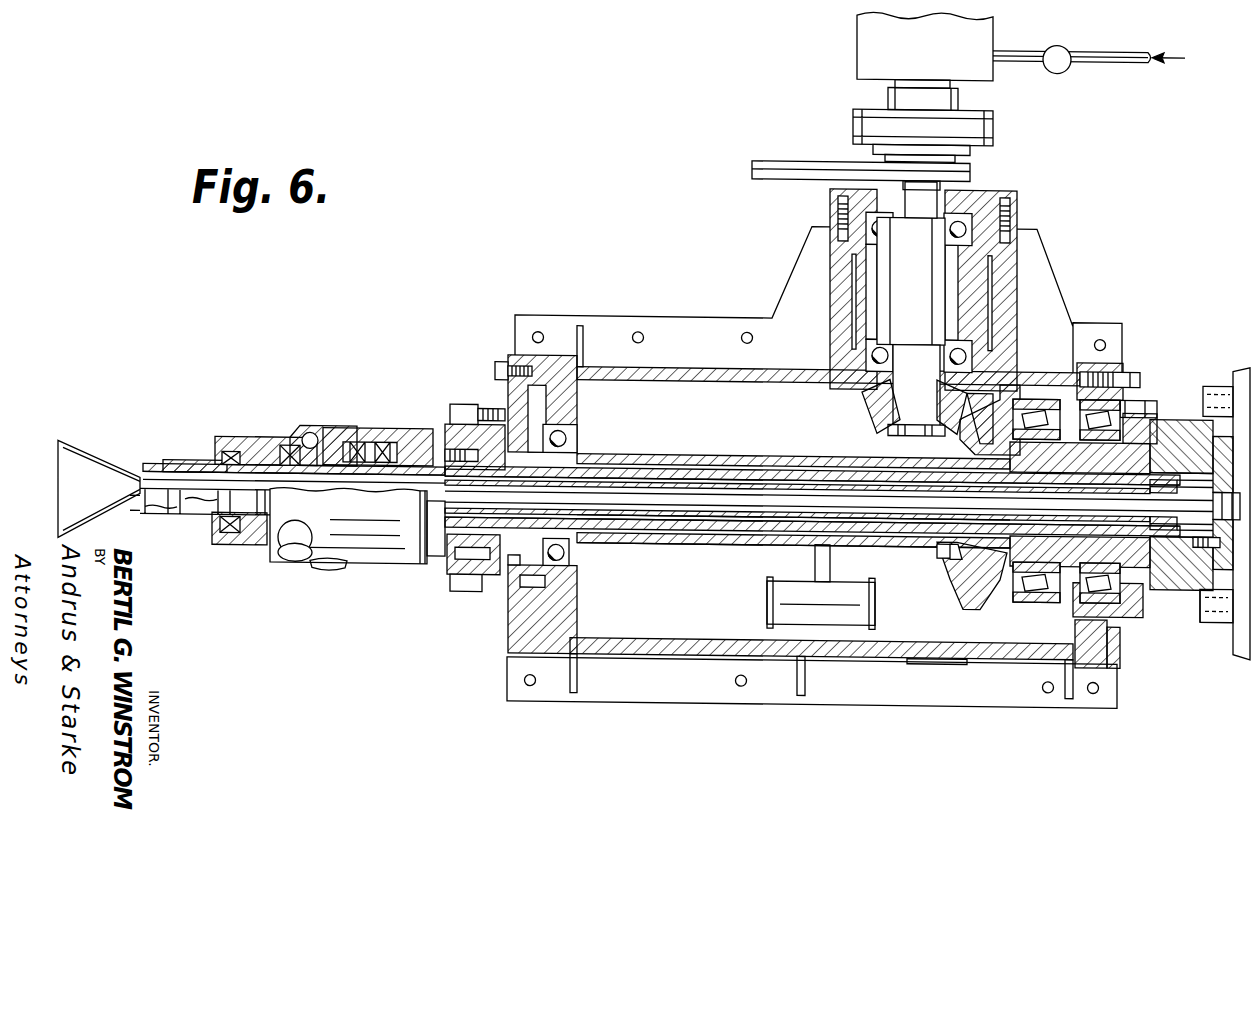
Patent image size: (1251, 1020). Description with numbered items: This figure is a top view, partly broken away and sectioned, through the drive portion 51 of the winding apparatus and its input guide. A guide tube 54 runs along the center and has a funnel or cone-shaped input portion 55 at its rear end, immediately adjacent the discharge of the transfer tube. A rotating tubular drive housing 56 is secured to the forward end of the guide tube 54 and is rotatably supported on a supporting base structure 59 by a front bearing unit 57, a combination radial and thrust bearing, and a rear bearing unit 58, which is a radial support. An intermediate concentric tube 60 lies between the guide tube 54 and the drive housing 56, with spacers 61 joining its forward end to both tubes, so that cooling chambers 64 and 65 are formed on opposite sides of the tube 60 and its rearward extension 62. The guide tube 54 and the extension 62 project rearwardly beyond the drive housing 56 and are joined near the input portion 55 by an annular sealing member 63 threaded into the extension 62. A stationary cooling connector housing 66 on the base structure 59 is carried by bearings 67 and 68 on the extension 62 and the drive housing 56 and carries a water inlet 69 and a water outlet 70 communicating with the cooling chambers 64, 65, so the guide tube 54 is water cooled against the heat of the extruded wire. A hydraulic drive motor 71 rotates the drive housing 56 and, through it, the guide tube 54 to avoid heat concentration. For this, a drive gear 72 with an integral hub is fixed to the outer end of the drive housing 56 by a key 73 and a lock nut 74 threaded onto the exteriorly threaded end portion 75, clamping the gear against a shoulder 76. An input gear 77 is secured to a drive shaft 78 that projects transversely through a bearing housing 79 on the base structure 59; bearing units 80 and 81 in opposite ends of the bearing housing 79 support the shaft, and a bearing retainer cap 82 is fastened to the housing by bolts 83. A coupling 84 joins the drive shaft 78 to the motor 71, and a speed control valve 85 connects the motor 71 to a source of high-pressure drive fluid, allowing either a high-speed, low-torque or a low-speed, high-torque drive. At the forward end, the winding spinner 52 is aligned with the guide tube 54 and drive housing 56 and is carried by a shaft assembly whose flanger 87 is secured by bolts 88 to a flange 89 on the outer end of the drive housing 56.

The drive portion 51 is at (668, 358).
The winding spinner 52 is at (1215, 500).
The guide tube 54 is at (724, 478).
The funnel or cone-shaped input portion 55 is at (96, 459).
The rotating tubular drive housing 56 is at (662, 456).
The front bearing unit 57 is at (1085, 598).
The rear bearing unit 58 is at (577, 432).
The supporting base structure 59 is at (632, 315).
The intermediate concentric tube 60 is at (800, 468).
The spacers 61 is at (570, 486).
The extension 62 is at (380, 453).
The annular sealing member 63 is at (150, 469).
The cooling chamber 64 is at (655, 535).
The cooling chamber 65 is at (718, 535).
The cooling connector housing 66 is at (404, 568).
The bearing 67 is at (230, 543).
The bearing 68 is at (410, 436).
The water inlet 69 is at (280, 556).
The water outlet 70 is at (328, 571).
The hydraulic drive motor 71 is at (857, 51).
The drive gear 72 is at (975, 599).
The key 73 is at (978, 432).
The lock nut 74 is at (942, 551).
The exteriorly threaded end portion 75 is at (952, 557).
The shoulder 76 is at (1014, 566).
The input gear 77 is at (878, 401).
The drive shaft 78 is at (898, 292).
The bearing housing 79 is at (1010, 292).
The bearing unit 80 is at (968, 205).
The bearing unit 81 is at (972, 360).
The bearing retainer cap 82 is at (1012, 204).
The bolts 83 is at (836, 207).
The coupling 84 is at (995, 129).
The speed control valve 85 is at (1062, 67).
The flanger 87 is at (1230, 631).
The bolts 88 is at (1200, 597).
The flange 89 is at (1205, 611).